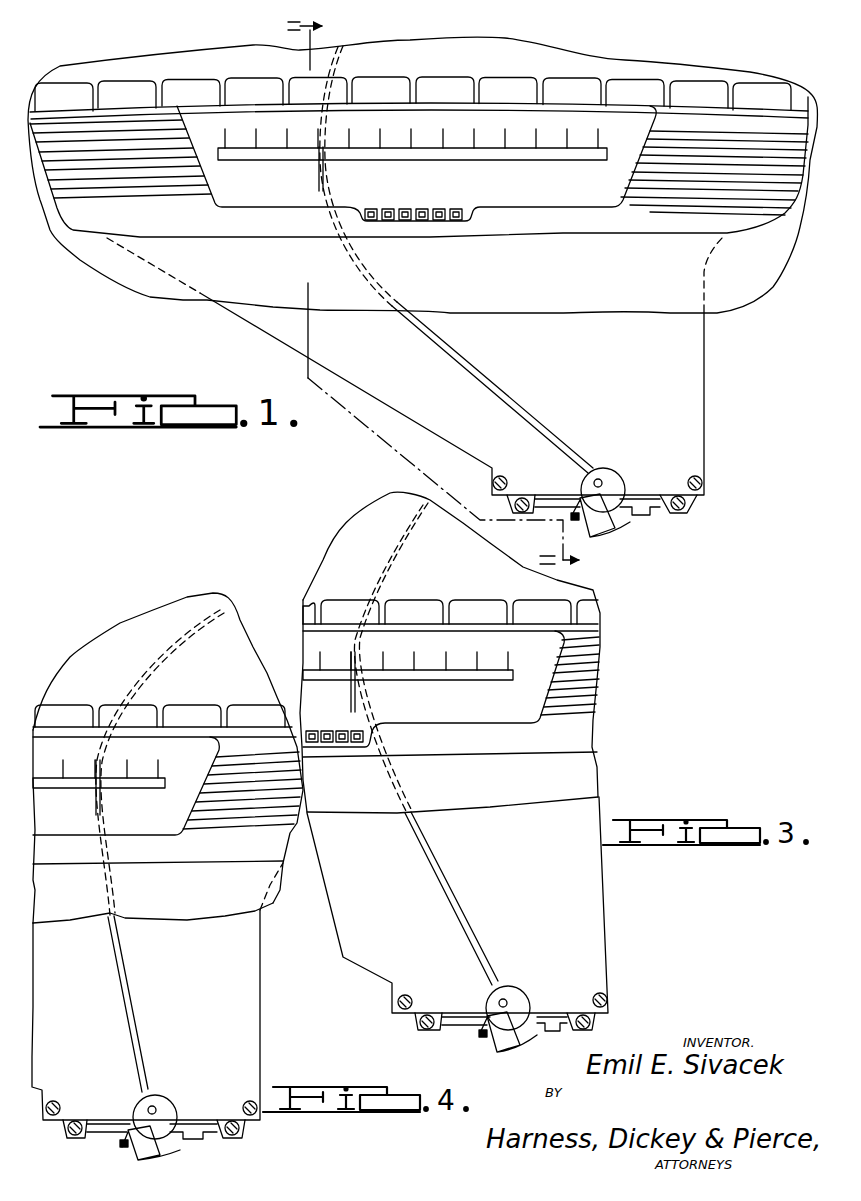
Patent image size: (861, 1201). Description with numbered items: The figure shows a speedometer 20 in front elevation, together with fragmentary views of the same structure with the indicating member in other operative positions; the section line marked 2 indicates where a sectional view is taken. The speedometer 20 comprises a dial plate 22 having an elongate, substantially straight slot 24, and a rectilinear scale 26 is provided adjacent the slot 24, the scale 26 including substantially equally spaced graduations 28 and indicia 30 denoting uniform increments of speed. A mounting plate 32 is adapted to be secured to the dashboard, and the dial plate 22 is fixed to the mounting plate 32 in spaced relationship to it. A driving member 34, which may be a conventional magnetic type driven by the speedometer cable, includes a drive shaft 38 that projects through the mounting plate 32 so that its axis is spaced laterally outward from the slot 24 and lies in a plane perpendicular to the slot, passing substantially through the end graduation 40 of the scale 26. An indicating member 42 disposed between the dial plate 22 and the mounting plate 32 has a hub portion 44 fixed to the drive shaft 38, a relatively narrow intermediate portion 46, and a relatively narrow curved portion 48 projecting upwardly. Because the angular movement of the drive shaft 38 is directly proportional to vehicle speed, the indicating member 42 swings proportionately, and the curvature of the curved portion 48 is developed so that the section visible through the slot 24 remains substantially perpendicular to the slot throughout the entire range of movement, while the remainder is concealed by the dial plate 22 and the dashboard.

In FIG. 1, the section line 2- 2 is at (449, 289).
In FIG. 1, the speedometer 20 is at (704, 390).
In FIG. 3, the speedometer 20 is at (610, 927).
In FIG. 4, the speedometer 20 is at (262, 1050).
In FIG. 1, the dial plate 22 is at (563, 123).
In FIG. 3, the dial plate 22 is at (467, 637).
In FIG. 4, the dial plate 22 is at (177, 747).
In FIG. 1, the slot 24 is at (436, 150).
In FIG. 3, the slot 24 is at (430, 667).
In FIG. 4, the slot 24 is at (143, 779).
In FIG. 1, the rectilinear scale 26 is at (353, 131).
In FIG. 3, the rectilinear scale 26 is at (414, 661).
In FIG. 4, the rectilinear scale 26 is at (110, 769).
In FIG. 1, the graduations 28 is at (478, 133).
In FIG. 3, the graduations 28 is at (416, 701).
In FIG. 4, the graduations 28 is at (104, 808).
In FIG. 1, the indicia 30 is at (490, 193).
In FIG. 3, the indicia 30 is at (334, 736).
In FIG. 1, the mounting plate 32 is at (680, 343).
In FIG. 3, the mounting plate 32 is at (600, 873).
In FIG. 4, the mounting plate 32 is at (238, 972).
In FIG. 1, the driving member 34 is at (627, 530).
In FIG. 3, the driving member 34 is at (537, 1047).
In FIG. 4, the driving member 34 is at (183, 1152).
In FIG. 1, the drive shaft 38 is at (600, 480).
In FIG. 3, the drive shaft 38 is at (505, 1000).
In FIG. 4, the drive shaft 38 is at (154, 1107).
In FIG. 1, the end graduation 40 is at (603, 143).
In FIG. 3, the end graduation 40 is at (353, 682).
In FIG. 4, the end graduation 40 is at (98, 787).
In FIG. 1, the indicating member 42 is at (463, 353).
In FIG. 3, the indicating member 42 is at (440, 860).
In FIG. 4, the indicating member 42 is at (130, 973).
In FIG. 1, the hub portion 44 is at (630, 473).
In FIG. 3, the hub portion 44 is at (523, 1000).
In FIG. 4, the hub portion 44 is at (163, 1107).
In FIG. 1, the intermediate portion 46 is at (497, 395).
In FIG. 4, the intermediate portion 46 is at (113, 943).
In FIG. 1, the curved portion 48 is at (333, 248).
In FIG. 3, the curved portion 48 is at (380, 563).
In FIG. 4, the curved portion 48 is at (137, 680).